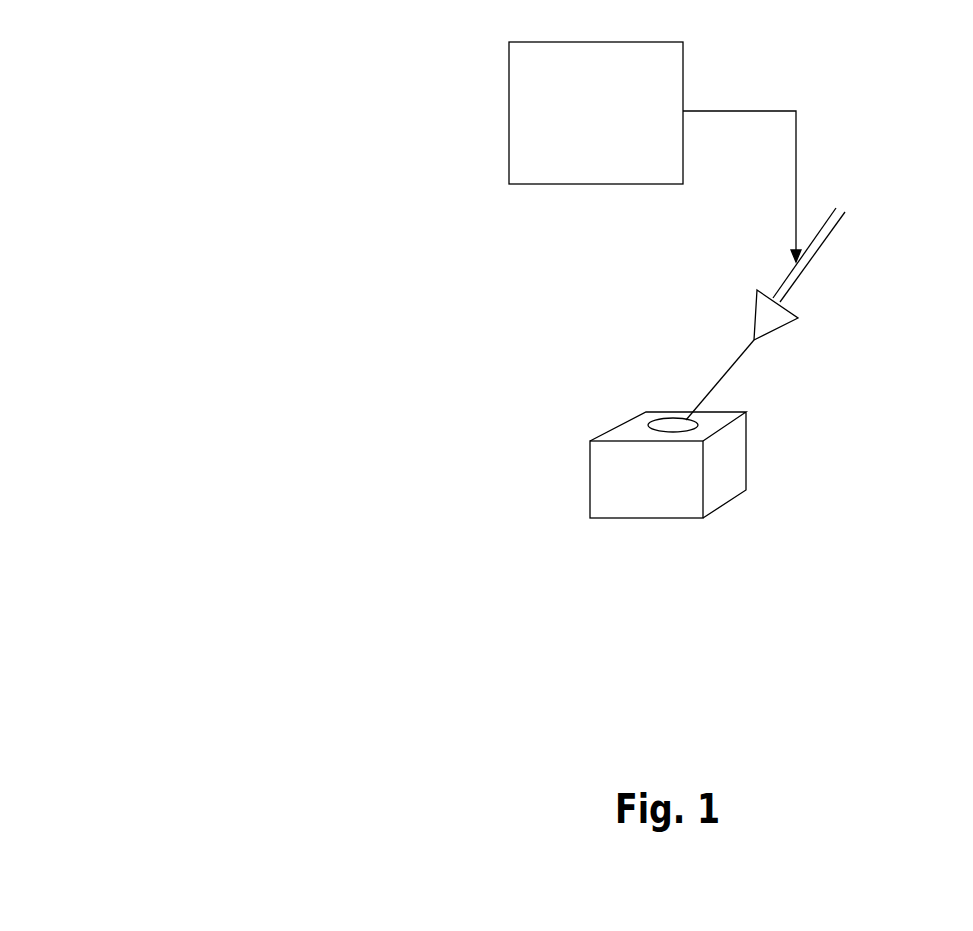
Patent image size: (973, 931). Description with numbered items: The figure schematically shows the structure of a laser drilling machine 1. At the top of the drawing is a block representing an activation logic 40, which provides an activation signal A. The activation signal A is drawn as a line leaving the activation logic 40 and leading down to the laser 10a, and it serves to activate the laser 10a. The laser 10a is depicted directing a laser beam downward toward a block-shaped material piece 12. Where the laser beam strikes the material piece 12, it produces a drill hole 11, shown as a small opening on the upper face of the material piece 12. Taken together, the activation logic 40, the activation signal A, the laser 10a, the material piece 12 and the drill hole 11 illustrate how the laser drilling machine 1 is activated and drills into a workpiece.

The laser drilling machine 1 is at (231, 86).
The activation logic 40 is at (495, 48).
The activation signal A is at (805, 117).
The laser 10a is at (855, 257).
The drill hole 11 is at (632, 425).
The material piece 12 is at (730, 462).